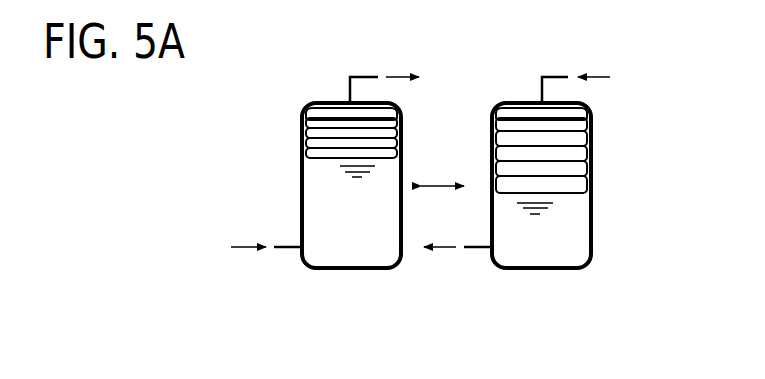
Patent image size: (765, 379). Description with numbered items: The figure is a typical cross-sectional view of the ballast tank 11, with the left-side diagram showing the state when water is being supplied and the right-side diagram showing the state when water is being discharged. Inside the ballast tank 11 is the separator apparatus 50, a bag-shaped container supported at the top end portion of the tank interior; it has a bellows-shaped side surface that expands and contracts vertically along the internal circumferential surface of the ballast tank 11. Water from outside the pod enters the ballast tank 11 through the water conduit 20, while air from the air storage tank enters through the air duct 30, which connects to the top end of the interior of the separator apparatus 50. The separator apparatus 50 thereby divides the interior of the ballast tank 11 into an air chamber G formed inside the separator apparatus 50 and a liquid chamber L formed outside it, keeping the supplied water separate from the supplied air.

The ballast tank 11 is at (302, 198).
The water conduit 20 is at (290, 250).
The air duct 30 is at (364, 76).
The separator apparatus 50 is at (322, 158).
The air chamber G is at (352, 132).
The liquid chamber L is at (353, 247).